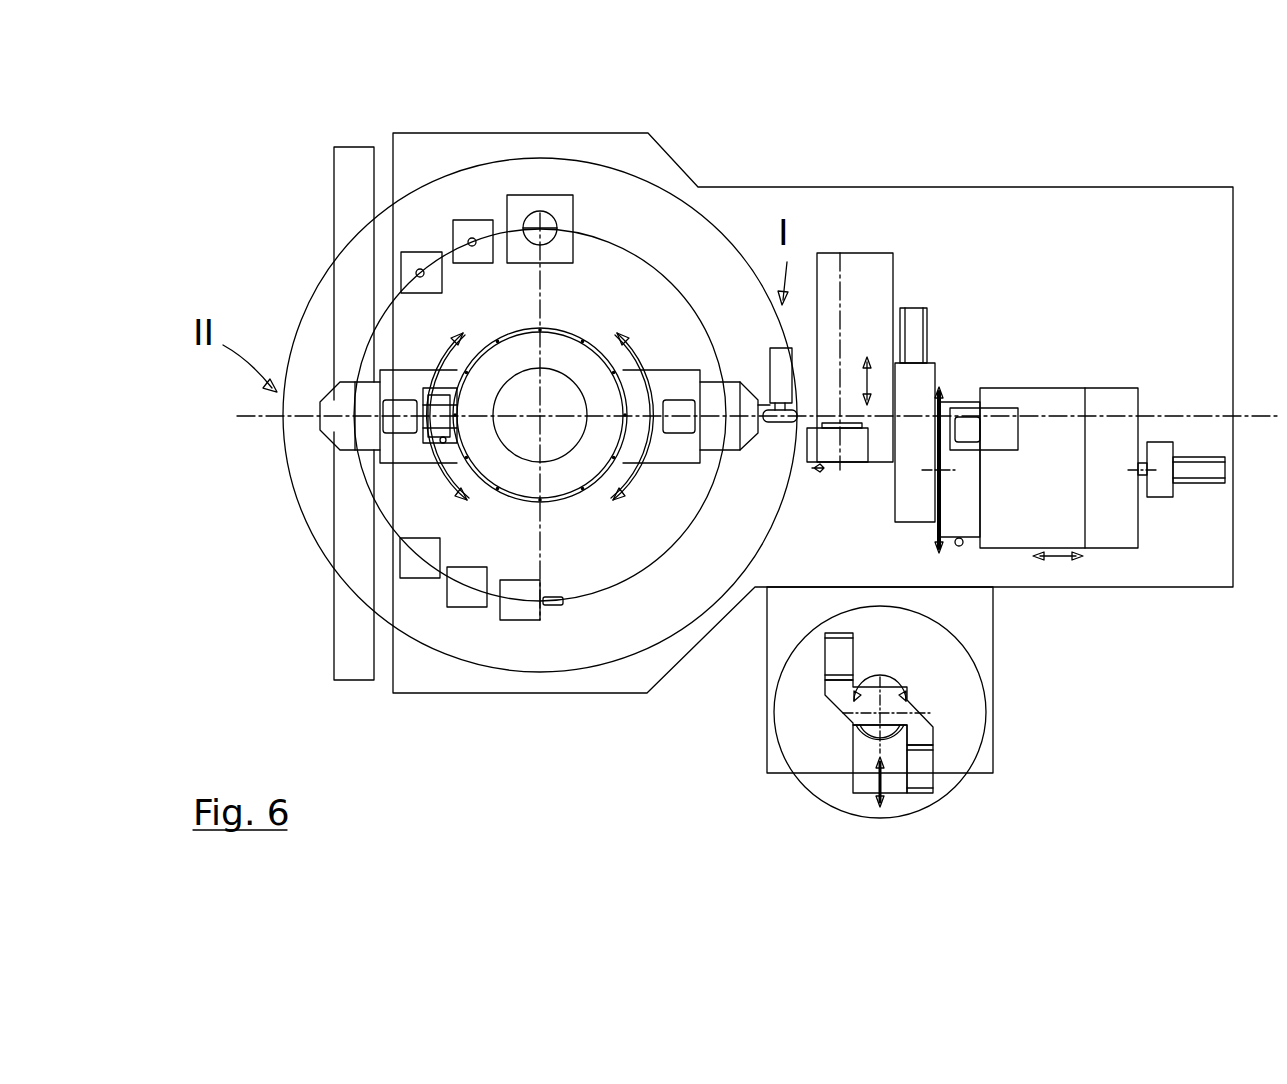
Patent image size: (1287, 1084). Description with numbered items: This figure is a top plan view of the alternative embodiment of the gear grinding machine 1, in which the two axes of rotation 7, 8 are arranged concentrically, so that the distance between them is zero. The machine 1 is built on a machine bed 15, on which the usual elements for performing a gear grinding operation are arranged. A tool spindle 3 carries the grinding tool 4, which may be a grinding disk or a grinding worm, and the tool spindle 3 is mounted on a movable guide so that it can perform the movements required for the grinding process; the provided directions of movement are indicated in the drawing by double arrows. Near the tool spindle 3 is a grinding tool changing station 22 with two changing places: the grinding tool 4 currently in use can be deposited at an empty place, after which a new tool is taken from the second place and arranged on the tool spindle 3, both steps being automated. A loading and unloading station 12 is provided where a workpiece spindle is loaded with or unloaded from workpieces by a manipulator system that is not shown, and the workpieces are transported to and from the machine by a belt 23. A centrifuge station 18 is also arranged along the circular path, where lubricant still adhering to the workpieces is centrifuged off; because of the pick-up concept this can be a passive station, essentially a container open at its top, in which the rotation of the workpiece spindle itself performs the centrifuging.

The gear grinding machine 1 is at (820, 155).
The tool spindle 3 is at (828, 343).
The grinding tool 4 is at (853, 450).
The axis of rotation 7 is at (560, 286).
The axis of rotation 8 is at (540, 416).
The loading and unloading station 12 is at (230, 437).
The machine bed 15 is at (1067, 225).
The centrifuge station 18 is at (522, 203).
The grinding tool changing station 22 is at (837, 732).
The belt 23 is at (348, 652).